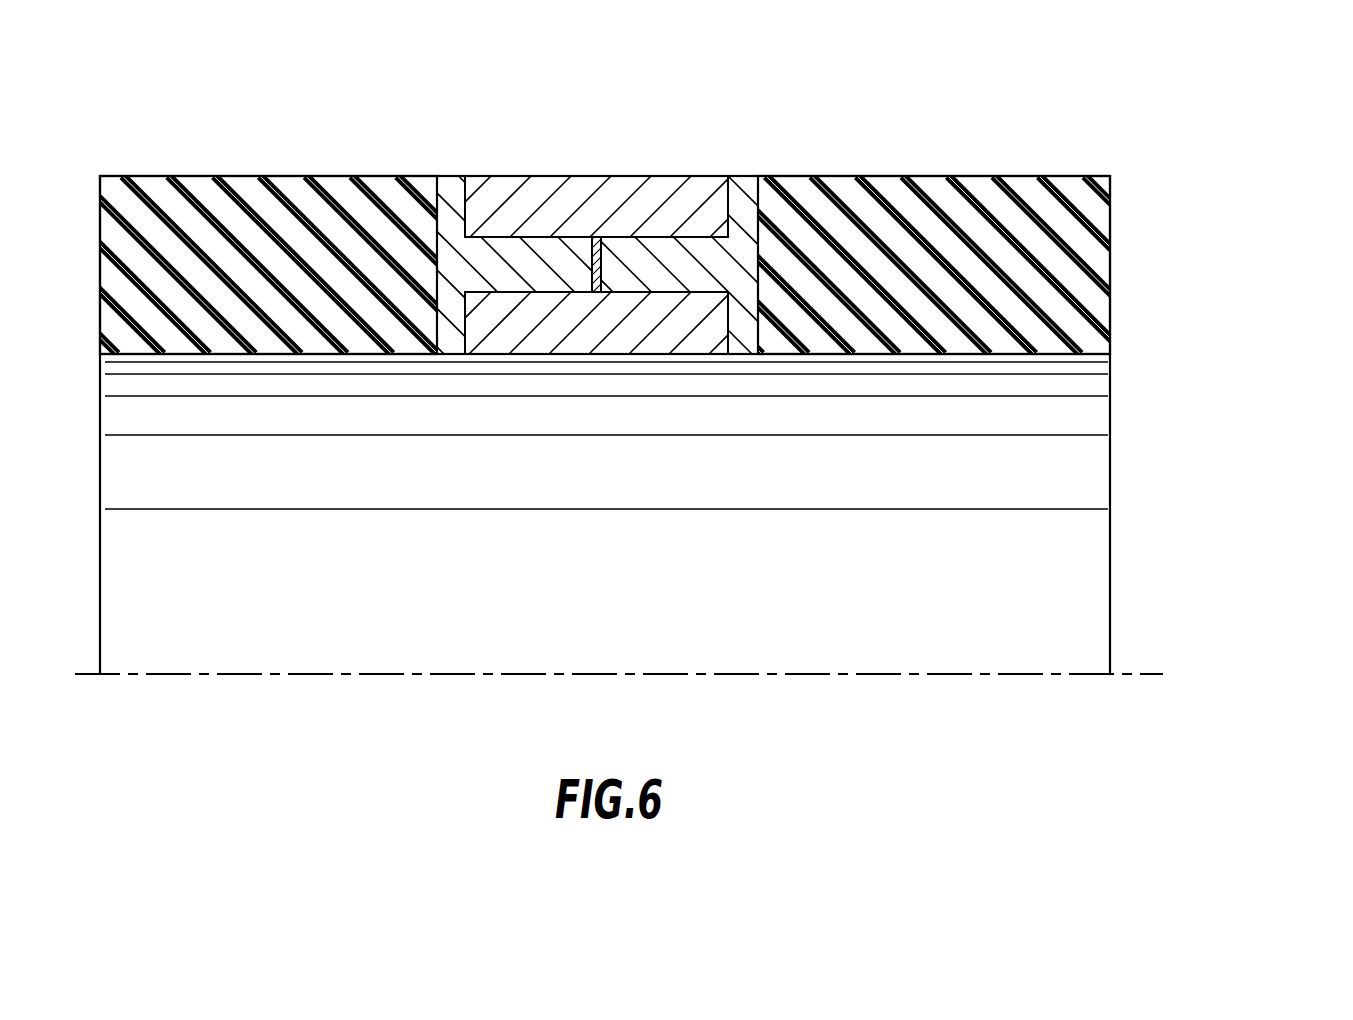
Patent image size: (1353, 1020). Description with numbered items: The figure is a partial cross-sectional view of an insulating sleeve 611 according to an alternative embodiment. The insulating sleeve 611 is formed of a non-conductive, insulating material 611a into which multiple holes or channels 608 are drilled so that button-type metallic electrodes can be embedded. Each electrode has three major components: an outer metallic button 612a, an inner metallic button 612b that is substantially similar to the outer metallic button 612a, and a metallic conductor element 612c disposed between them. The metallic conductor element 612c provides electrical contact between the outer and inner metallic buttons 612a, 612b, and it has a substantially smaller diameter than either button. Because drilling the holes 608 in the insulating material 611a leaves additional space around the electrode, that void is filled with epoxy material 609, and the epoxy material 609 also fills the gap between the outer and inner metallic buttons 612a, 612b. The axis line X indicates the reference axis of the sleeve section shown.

The insulating sleeve 611 is at (1203, 264).
The insulating material 611a is at (967, 213).
The outer metallic button 612a is at (688, 187).
The inner metallic button 612b is at (623, 333).
The metallic conductor element 612c is at (603, 262).
The holes or channels 608 is at (747, 337).
The epoxy material 609 is at (447, 354).
The reference axis line X is at (1143, 672).